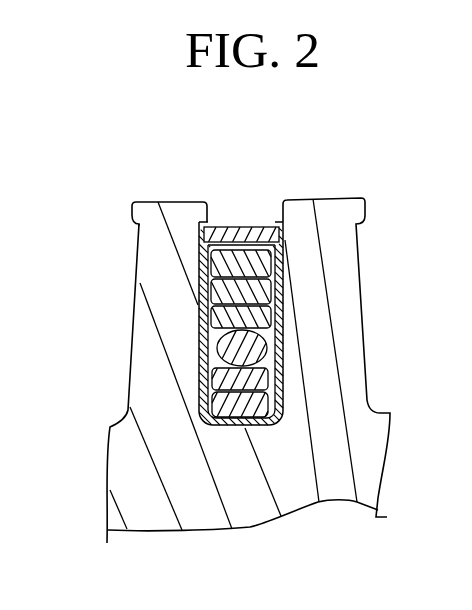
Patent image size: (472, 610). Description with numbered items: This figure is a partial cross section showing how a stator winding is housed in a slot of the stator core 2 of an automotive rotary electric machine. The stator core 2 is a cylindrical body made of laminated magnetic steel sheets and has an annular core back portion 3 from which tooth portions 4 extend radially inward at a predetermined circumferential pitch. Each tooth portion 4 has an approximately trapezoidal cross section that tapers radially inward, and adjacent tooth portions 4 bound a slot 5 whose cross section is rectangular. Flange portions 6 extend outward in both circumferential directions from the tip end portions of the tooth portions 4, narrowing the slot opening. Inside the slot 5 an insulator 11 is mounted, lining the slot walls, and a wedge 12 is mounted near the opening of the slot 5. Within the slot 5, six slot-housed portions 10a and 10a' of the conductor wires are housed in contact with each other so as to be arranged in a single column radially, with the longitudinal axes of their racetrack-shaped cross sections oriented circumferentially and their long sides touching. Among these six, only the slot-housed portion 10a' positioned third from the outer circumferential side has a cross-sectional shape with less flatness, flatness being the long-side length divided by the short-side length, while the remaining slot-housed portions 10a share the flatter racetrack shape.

The stator core 2 is at (114, 212).
The core back portion 3 is at (155, 513).
The tooth portion 4 is at (147, 358).
The slot 5 is at (197, 320).
The flange portion 6 is at (150, 204).
The slot-housed portion 10a is at (326, 333).
The slot-housed portion 10a' is at (333, 353).
The insulator 11 is at (203, 377).
The wedge 12 is at (225, 224).